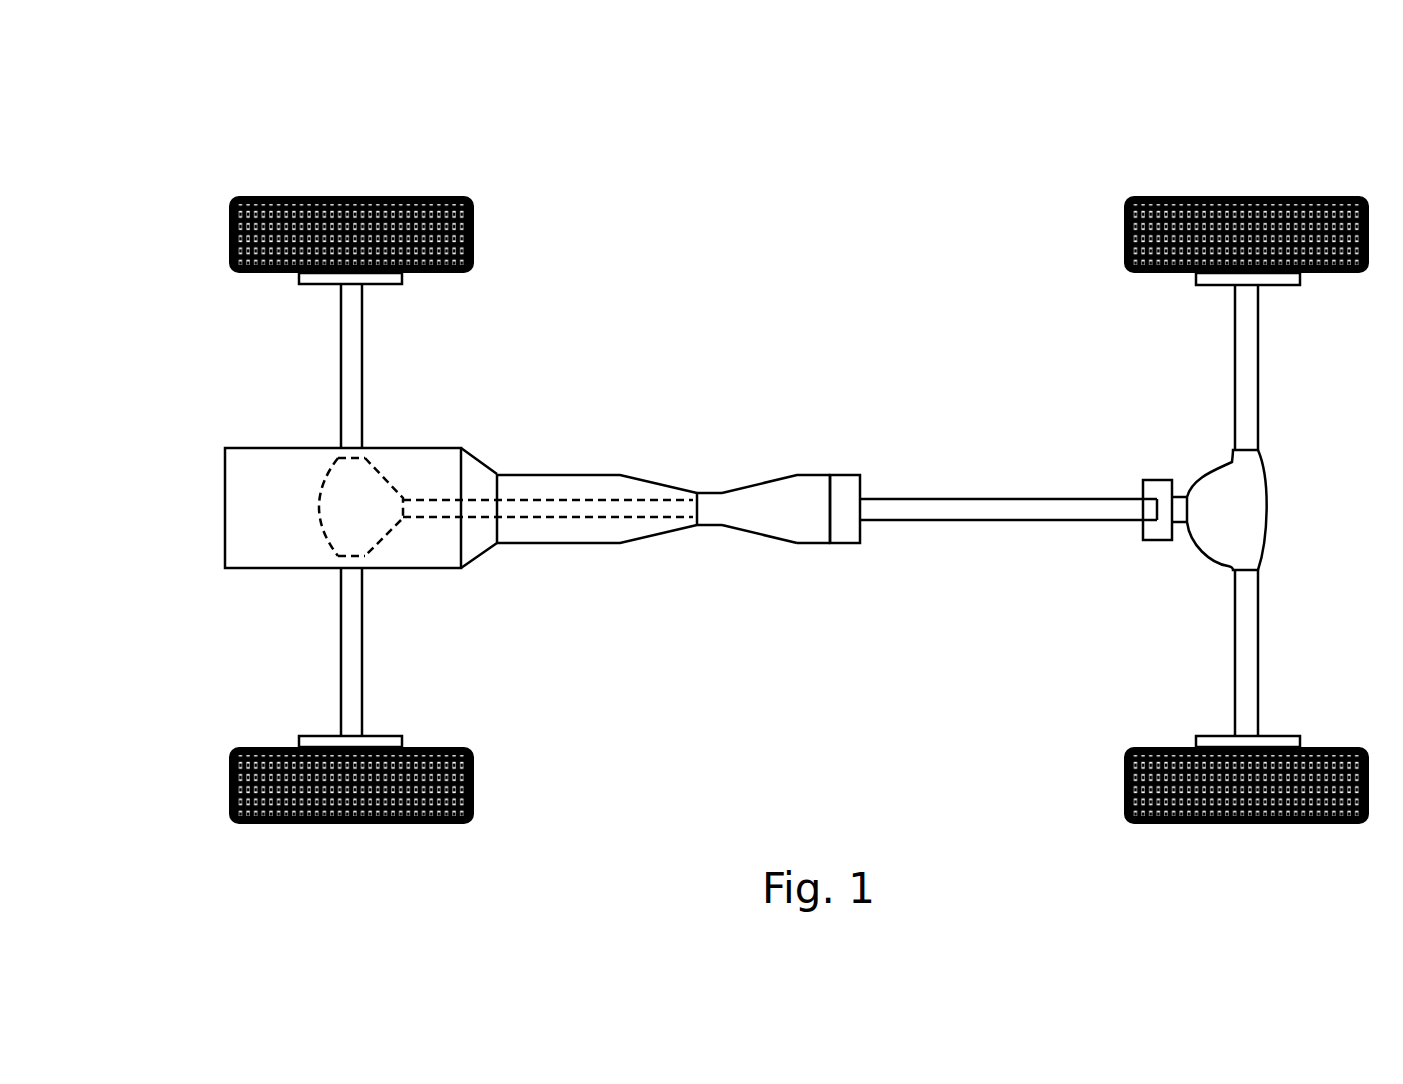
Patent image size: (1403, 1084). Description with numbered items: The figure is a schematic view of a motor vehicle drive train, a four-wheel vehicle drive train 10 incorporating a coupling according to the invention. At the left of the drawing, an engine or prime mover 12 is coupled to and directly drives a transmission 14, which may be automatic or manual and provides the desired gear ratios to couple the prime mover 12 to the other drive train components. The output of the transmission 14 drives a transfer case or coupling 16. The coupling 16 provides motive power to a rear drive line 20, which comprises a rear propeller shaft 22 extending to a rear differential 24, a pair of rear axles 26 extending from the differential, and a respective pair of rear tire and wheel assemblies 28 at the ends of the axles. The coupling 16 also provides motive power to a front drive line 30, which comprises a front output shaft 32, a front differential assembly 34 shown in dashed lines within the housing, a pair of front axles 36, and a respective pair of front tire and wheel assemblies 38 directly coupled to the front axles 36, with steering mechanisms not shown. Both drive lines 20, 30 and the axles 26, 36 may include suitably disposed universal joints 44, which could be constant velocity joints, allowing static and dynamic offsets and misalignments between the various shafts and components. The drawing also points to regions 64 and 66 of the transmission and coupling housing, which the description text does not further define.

The four-wheel vehicle drive train 10 is at (814, 238).
The prime mover 12 is at (226, 510).
The transmission 14 is at (565, 487).
The coupling 16 is at (780, 494).
The rear drive line 20 is at (1088, 412).
The rear propeller shaft 22 is at (1012, 513).
The rear differential 24 is at (1248, 510).
The rear axles 26 is at (1255, 362).
The rear tire and wheel assemblies 28 is at (1251, 185).
The front drive line 30 is at (518, 386).
The front output shaft 32 is at (517, 507).
The front differential assembly 34 is at (356, 507).
The front axles 36 is at (341, 360).
The front tire and wheel assemblies 38 is at (246, 186).
The universal joints 44 is at (846, 490).
The reduced diameter neck portion 64 is at (701, 470).
The enlarged end portion 66 is at (817, 552).